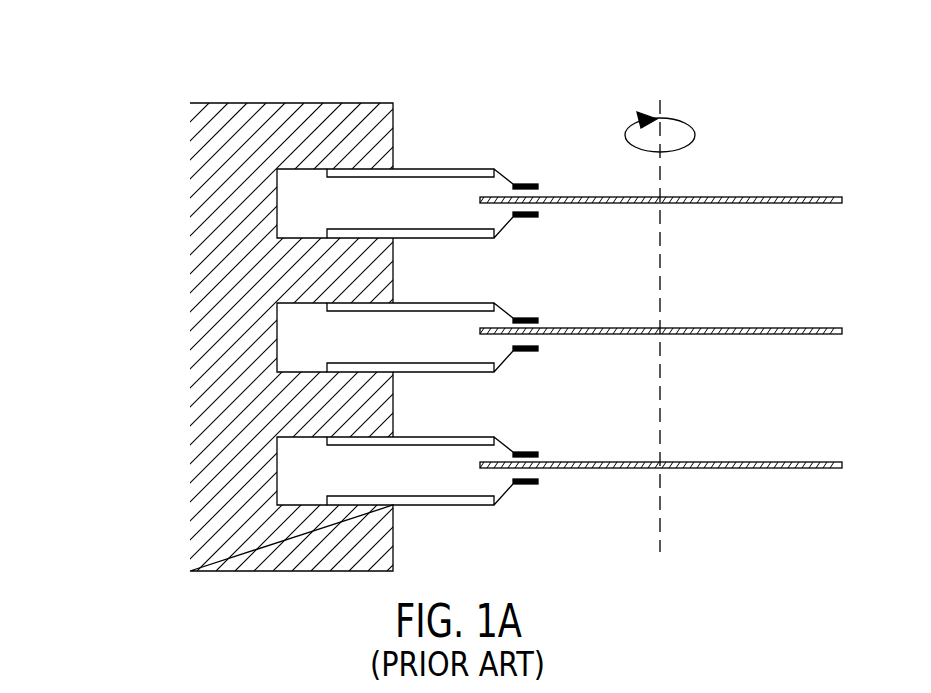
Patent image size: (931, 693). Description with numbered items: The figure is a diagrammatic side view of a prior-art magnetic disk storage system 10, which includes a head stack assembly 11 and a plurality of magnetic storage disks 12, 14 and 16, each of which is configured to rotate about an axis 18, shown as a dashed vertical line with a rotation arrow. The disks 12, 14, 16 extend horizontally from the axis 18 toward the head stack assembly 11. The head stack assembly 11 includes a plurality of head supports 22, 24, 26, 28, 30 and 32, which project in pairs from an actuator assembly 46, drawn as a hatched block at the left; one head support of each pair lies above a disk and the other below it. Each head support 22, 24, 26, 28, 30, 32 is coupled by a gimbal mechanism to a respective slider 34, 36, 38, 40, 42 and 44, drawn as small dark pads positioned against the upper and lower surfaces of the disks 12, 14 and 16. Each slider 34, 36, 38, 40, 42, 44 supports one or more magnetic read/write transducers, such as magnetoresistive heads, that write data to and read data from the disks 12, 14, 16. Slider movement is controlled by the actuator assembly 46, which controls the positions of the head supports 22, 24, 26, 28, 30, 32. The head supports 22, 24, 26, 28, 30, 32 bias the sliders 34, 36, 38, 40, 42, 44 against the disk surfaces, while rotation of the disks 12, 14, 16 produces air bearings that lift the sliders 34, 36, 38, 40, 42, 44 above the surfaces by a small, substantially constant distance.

The magnetic disk storage system 10 is at (736, 79).
The head stack assembly 11 is at (148, 66).
The magnetic storage disk 12 is at (800, 196).
The magnetic storage disk 14 is at (797, 327).
The magnetic storage disk 16 is at (801, 461).
The axis 18 is at (664, 275).
The head support 22 is at (433, 168).
The head support 24 is at (412, 228).
The head support 26 is at (433, 302).
The head support 28 is at (412, 362).
The head support 30 is at (437, 436).
The head support 32 is at (414, 495).
The slider 34 is at (532, 183).
The slider 36 is at (534, 218).
The slider 38 is at (533, 317).
The slider 40 is at (533, 352).
The slider 42 is at (535, 451).
The slider 44 is at (535, 485).
The actuator assembly 46 is at (325, 103).